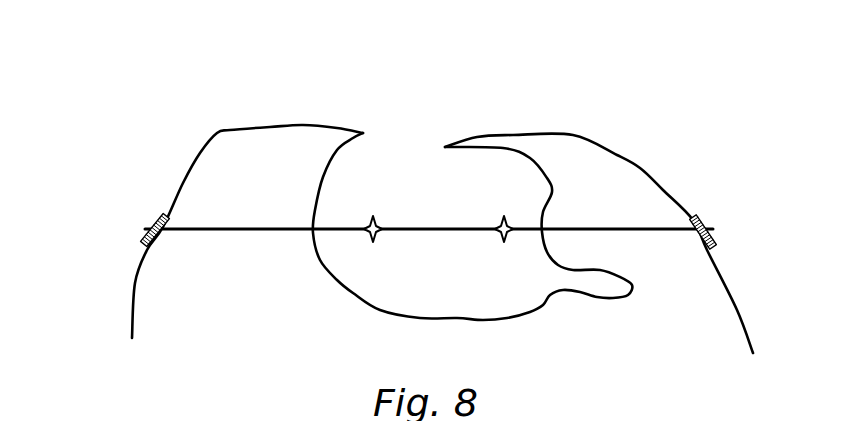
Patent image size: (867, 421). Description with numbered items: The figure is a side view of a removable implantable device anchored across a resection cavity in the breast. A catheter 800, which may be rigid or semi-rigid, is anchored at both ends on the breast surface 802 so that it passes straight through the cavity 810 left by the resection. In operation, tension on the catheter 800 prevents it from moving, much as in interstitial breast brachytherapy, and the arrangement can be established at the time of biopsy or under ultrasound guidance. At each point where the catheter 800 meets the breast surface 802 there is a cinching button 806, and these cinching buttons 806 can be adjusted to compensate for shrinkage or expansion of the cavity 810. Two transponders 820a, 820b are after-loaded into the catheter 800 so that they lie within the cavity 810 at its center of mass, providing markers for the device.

The catheter 800 is at (328, 228).
The breast surface 802 is at (200, 157).
The cinching buttons 806 is at (160, 217).
The cavity 810 is at (412, 158).
The transponder 820a is at (370, 238).
The transponder 820b is at (508, 237).